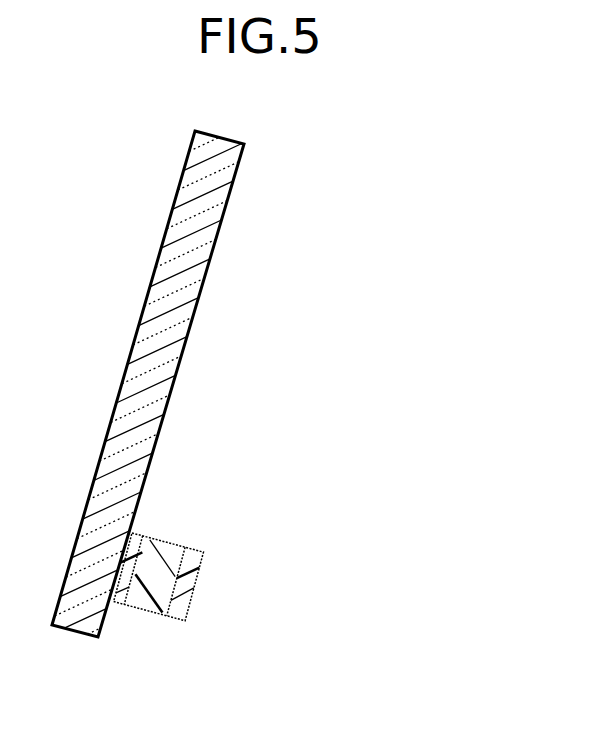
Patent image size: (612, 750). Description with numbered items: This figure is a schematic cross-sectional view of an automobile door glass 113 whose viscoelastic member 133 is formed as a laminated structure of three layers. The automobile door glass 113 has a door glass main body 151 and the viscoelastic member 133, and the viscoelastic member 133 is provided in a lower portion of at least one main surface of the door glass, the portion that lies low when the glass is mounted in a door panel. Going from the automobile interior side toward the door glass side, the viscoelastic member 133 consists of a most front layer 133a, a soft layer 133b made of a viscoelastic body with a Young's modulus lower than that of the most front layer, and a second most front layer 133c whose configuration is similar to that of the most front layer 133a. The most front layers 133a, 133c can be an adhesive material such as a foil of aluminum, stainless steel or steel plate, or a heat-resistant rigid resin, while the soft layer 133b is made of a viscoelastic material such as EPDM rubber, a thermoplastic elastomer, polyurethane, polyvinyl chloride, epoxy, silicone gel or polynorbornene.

The automobile door glass 113 is at (350, 373).
The door glass main body 151 is at (205, 277).
The viscoelastic member 133 is at (209, 590).
The most front layer 133a is at (173, 617).
The soft layer 133b is at (167, 537).
The most front layer 133c is at (117, 607).